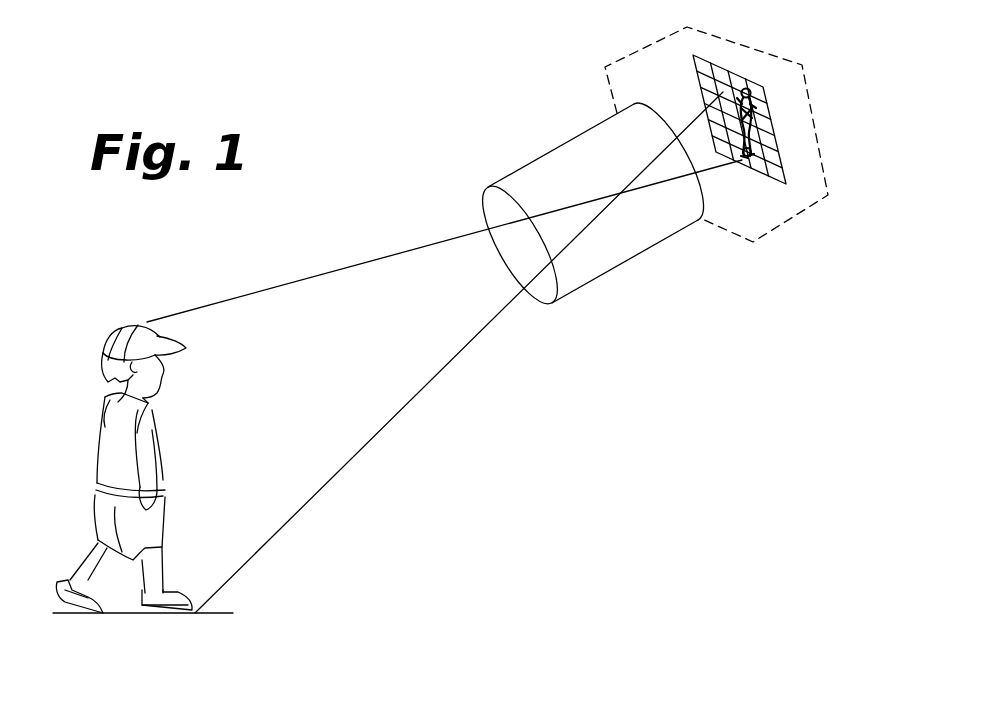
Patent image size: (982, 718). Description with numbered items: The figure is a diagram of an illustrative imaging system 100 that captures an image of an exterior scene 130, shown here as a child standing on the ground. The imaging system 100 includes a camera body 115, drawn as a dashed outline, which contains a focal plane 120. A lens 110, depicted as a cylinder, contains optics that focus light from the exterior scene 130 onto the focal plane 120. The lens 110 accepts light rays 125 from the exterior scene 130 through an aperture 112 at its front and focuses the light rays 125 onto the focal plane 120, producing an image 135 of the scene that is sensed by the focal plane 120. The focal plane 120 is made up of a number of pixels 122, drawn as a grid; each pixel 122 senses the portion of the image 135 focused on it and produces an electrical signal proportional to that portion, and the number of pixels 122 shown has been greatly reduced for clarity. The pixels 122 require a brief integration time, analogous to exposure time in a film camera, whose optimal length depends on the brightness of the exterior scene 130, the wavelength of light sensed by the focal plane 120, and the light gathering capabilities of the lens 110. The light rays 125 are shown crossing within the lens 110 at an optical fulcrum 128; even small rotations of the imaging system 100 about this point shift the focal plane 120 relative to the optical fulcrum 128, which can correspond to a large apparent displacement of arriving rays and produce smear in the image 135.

The imaging system 100 is at (522, 106).
The lens 110 is at (593, 277).
The aperture 112 is at (547, 288).
The camera body 115 is at (785, 225).
The focal plane 120 is at (735, 77).
The pixels 122 is at (776, 168).
The light rays 125 is at (402, 410).
The optical fulcrum 128 is at (618, 196).
The exterior scene 130 is at (98, 422).
The image 135 is at (757, 125).